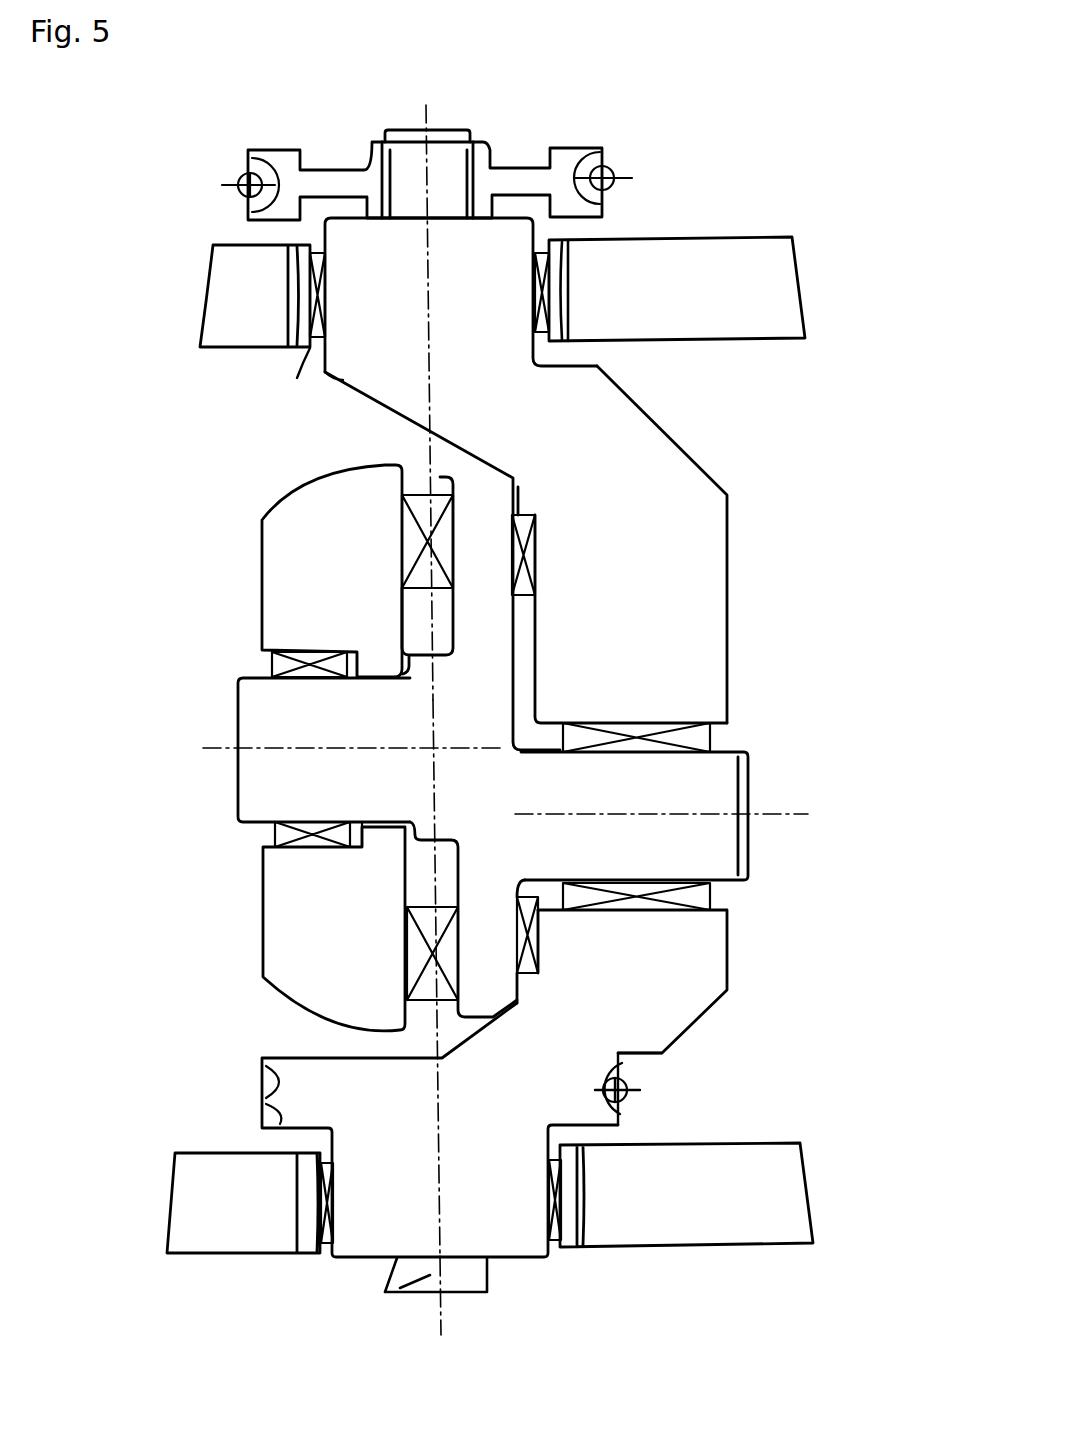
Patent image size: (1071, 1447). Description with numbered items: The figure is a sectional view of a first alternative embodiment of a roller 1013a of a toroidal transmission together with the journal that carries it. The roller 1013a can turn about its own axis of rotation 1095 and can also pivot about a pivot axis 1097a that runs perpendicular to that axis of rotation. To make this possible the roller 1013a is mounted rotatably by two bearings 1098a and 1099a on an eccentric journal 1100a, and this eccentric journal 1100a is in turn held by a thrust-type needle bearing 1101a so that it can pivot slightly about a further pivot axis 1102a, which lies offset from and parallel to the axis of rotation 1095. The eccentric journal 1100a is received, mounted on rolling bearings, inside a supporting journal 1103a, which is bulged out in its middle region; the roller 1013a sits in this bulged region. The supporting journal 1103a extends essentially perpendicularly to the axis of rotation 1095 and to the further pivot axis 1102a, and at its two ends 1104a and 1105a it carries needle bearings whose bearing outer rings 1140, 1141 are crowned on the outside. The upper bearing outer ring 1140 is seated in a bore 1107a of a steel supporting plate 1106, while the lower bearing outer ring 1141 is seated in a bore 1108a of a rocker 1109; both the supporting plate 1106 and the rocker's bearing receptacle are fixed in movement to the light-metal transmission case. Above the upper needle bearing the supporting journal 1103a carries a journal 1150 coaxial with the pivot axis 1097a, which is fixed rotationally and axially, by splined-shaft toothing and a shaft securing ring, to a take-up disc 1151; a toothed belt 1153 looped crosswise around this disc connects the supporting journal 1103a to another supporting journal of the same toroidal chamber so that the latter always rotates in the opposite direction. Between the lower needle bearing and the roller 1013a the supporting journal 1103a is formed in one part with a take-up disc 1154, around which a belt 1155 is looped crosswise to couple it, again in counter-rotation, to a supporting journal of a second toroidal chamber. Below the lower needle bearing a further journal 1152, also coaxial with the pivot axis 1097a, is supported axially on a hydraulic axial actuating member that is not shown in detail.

The roller 1013a is at (238, 988).
The axis of rotation 1095 is at (210, 752).
The pivot axis 1097a is at (440, 1310).
The bearing 1098a is at (312, 848).
The bearing 1099a is at (432, 540).
The eccentric journal 1100a is at (637, 798).
The thrust-type needle bearing 1101a is at (687, 898).
The further pivot axis 1102a is at (780, 812).
The supporting journal 1103a is at (643, 612).
The end of supporting journal 1104a is at (580, 1286).
The end of supporting journal 1105a is at (600, 355).
The steel supporting plate 1106 is at (750, 315).
The bore 1107a is at (307, 370).
The bore 1108a is at (322, 1257).
The rocker 1109 is at (250, 1228).
The upper bearing outer ring 1140 is at (557, 287).
The lower bearing outer ring 1141 is at (573, 1203).
The journal 1150 is at (452, 200).
The take-up disc 1151 is at (523, 175).
The journal 1152 is at (395, 1275).
The toothed belt 1153 is at (615, 178).
The take-up disc 1154 is at (462, 1148).
The belt 1155 is at (625, 1068).